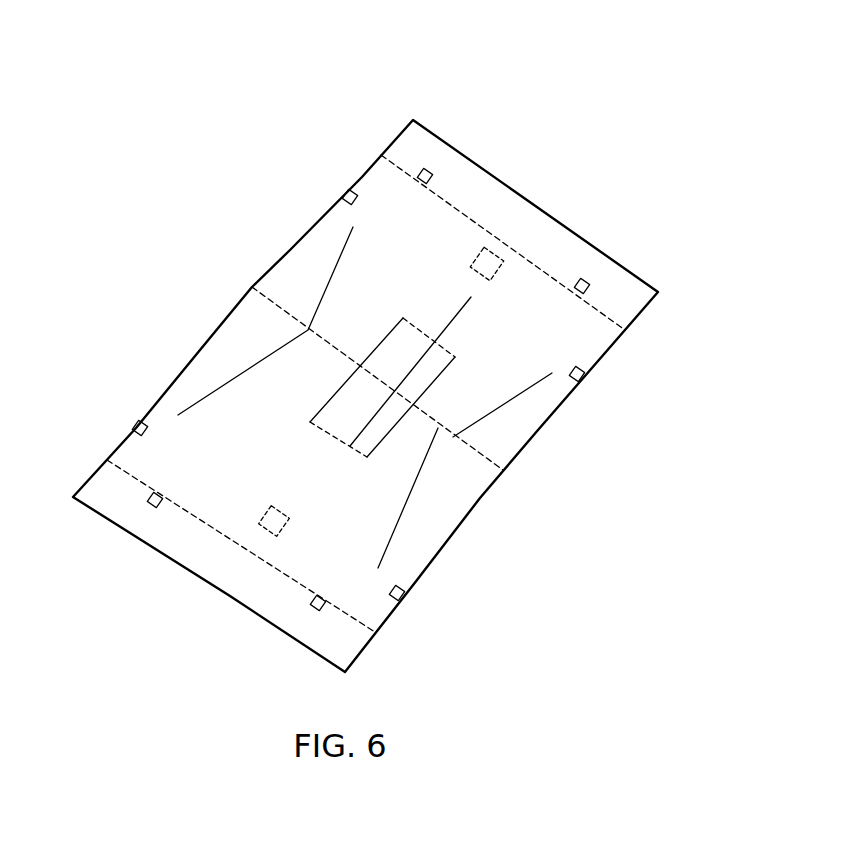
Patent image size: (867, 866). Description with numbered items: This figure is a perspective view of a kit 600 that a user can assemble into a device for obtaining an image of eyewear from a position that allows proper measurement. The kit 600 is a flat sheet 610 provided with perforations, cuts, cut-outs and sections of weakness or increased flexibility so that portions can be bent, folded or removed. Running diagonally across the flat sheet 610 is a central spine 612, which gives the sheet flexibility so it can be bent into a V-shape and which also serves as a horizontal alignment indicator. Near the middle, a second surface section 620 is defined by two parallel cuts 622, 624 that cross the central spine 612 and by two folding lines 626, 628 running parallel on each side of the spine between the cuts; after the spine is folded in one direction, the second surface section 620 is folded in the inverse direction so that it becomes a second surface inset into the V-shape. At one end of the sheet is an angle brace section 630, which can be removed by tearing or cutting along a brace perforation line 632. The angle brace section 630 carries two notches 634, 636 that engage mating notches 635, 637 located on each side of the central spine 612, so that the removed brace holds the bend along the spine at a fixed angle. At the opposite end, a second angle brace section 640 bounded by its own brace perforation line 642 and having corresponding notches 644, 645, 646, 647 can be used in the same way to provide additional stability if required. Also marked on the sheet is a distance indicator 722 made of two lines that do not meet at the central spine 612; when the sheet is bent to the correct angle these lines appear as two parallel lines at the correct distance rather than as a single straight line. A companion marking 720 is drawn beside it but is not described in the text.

The kit 600 is at (620, 83).
The flat sheet 610 is at (420, 229).
The central spine 612 is at (238, 287).
The second surface section 620 is at (421, 372).
The parallel cut 622 is at (408, 408).
The parallel cut 624 is at (330, 397).
The folding line 626 is at (445, 352).
The folding line 628 is at (352, 445).
The angle brace section 630 is at (224, 569).
The brace perforation line 632 is at (345, 612).
The notch 634 is at (311, 606).
The mating notch 635 is at (404, 596).
The notch 636 is at (148, 505).
The mating notch 637 is at (583, 378).
The second angle brace section 640 is at (496, 217).
The brace perforation line 642 is at (384, 153).
The notch 644 is at (586, 281).
The notch 645 is at (344, 193).
The notch 646 is at (429, 170).
The notch 647 is at (134, 424).
The slit 720 is at (323, 240).
The distance indicator 722 is at (417, 525).